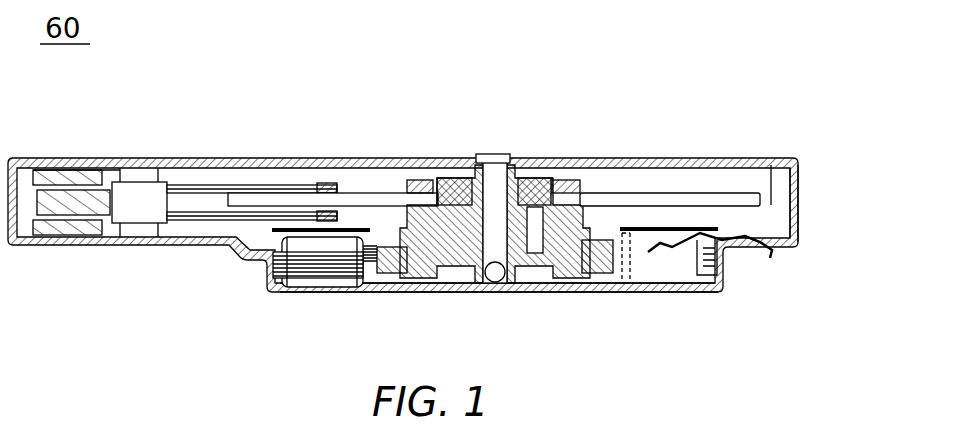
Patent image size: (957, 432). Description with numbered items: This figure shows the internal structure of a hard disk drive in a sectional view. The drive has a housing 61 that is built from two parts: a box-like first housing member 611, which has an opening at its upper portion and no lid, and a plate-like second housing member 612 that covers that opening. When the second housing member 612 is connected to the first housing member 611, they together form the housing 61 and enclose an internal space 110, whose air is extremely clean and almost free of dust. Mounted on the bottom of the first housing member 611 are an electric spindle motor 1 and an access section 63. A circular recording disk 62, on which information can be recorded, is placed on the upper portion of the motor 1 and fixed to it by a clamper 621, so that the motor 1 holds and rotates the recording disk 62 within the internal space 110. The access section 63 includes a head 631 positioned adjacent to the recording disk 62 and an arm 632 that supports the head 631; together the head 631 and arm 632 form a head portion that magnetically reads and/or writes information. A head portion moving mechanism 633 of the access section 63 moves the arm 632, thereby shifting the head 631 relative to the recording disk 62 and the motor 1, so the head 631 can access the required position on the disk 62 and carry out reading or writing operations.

The housing 61 is at (762, 325).
The first housing member 611 is at (675, 292).
The second housing member 612 is at (797, 162).
The recording disk 62 is at (668, 195).
The clamper 621 is at (578, 182).
The access section 63 is at (185, 234).
The head 631 is at (355, 195).
The arm 632 is at (248, 186).
The head portion moving mechanism 633 is at (140, 205).
The internal space 110 is at (776, 196).
The electric spindle motor 1 is at (517, 165).